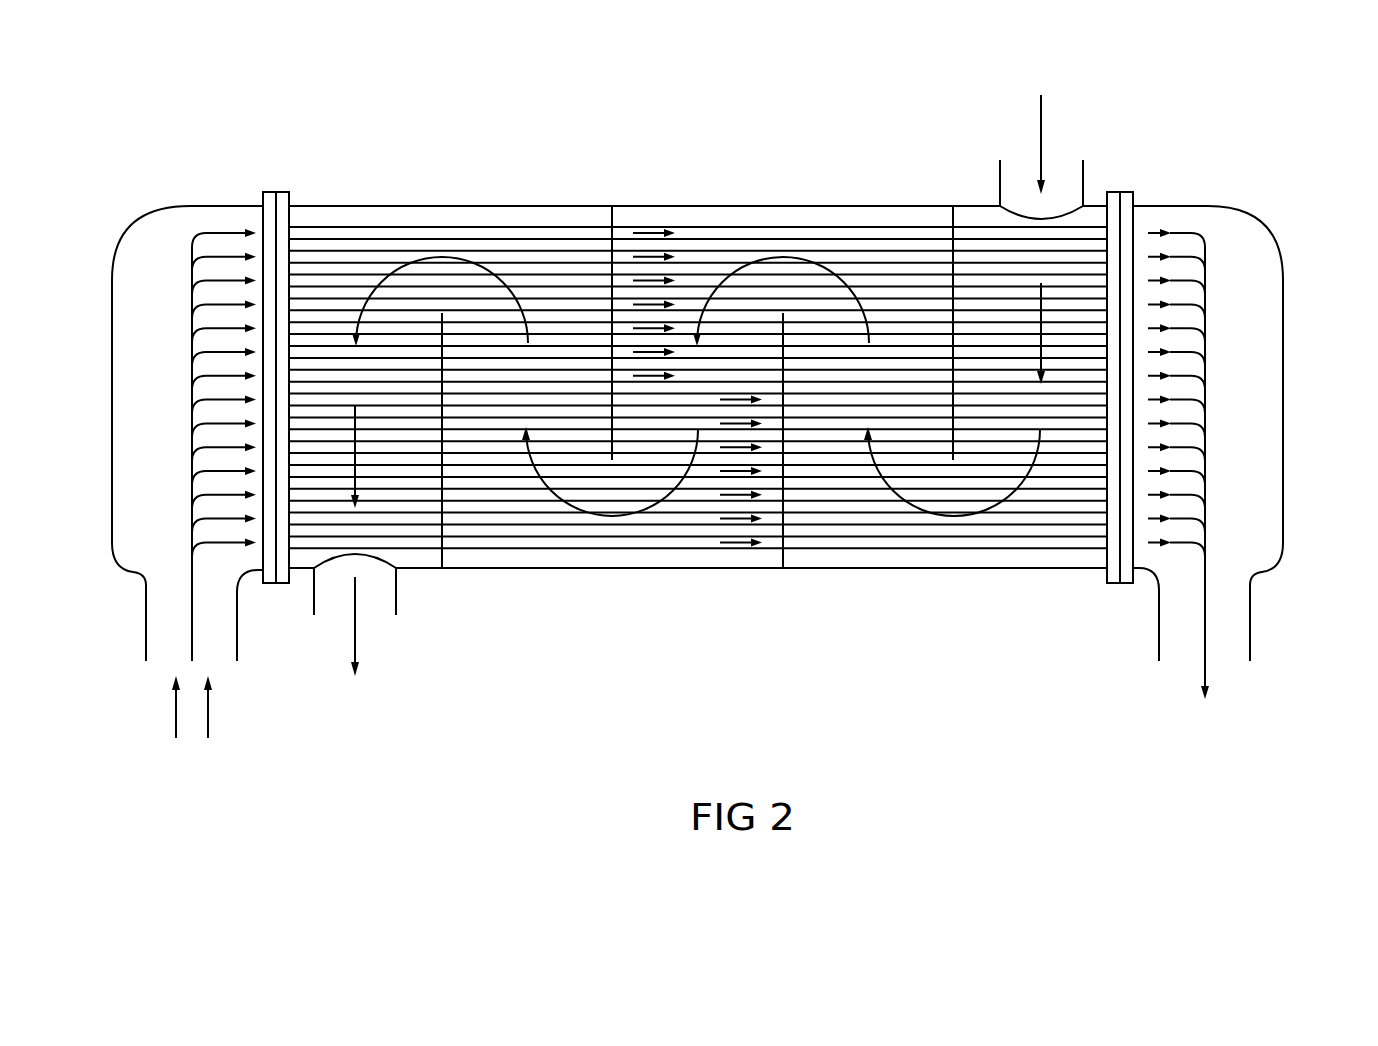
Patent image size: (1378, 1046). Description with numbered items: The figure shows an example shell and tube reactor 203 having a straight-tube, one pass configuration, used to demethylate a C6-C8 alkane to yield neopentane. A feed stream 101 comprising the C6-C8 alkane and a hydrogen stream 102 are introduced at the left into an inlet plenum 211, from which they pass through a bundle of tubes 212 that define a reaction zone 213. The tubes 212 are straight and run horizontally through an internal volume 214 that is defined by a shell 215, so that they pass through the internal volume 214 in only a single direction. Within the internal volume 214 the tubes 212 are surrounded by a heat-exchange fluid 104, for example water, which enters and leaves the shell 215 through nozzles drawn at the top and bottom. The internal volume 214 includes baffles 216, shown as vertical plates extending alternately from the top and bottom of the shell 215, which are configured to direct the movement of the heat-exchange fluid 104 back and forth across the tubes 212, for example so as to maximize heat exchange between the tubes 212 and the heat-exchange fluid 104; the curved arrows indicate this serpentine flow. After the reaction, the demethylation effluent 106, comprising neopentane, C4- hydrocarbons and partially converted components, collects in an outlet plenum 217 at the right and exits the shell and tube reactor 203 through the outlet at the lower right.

The shell and tube reactor 203 is at (136, 134).
The inlet plenum 211 is at (140, 370).
The tubes 212 is at (430, 233).
The reaction zone 213 is at (821, 232).
The internal volume 214 is at (912, 558).
The shell 215 is at (562, 571).
The baffles 216 is at (618, 214).
The outlet plenum 217 is at (1258, 502).
The feed stream 101 is at (175, 715).
The hydrogen stream 102 is at (209, 715).
The heat-exchange fluid 104 is at (1041, 118).
The demethylation effluent 106 is at (1201, 670).